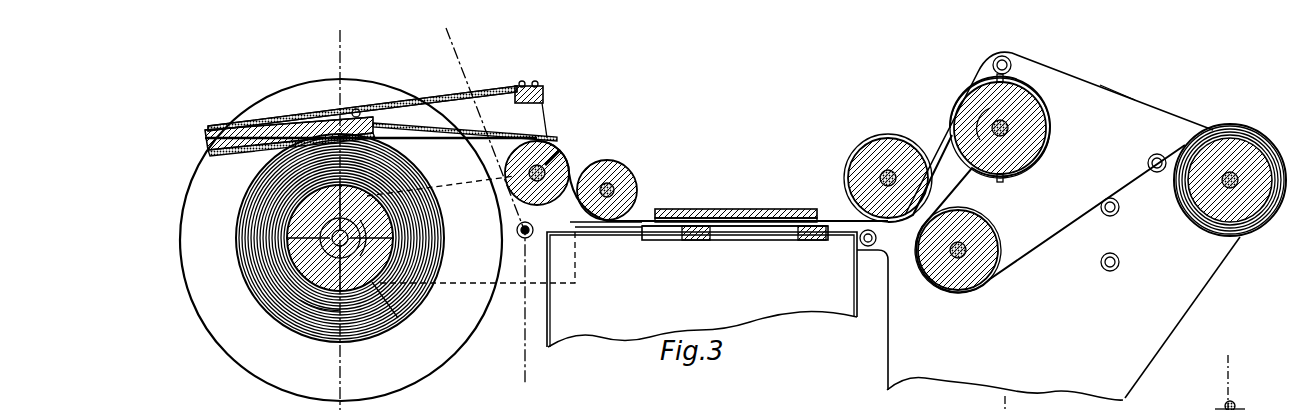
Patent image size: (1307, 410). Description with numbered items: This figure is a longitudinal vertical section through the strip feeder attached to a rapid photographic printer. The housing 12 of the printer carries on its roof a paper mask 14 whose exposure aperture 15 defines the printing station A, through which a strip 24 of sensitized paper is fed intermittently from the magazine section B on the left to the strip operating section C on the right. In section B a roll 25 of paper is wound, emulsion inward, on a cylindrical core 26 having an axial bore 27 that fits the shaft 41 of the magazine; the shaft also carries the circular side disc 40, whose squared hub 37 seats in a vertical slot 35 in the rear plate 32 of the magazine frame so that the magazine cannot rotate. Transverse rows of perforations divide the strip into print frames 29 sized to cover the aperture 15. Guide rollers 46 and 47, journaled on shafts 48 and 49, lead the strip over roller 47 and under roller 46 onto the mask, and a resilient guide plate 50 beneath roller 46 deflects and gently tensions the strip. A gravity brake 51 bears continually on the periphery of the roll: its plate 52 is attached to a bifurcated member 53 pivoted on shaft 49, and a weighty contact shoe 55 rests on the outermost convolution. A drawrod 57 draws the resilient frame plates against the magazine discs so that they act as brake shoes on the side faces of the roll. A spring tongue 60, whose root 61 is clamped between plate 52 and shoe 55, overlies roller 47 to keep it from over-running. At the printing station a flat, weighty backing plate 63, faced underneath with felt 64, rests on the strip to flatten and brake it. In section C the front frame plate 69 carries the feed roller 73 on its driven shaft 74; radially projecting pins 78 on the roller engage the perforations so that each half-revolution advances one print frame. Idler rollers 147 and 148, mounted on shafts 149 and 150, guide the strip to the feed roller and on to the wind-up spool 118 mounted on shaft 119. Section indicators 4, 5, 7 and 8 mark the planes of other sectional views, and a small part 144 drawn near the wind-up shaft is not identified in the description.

The section line 4- 4 is at (345, 37).
The section line 5- 5 is at (452, 37).
The section line 7- 7 is at (1005, 396).
The section line 8- 8 is at (1245, 355).
The printing station A is at (764, 205).
The magazine section B is at (480, 78).
The strip operating section C is at (1130, 88).
The housing 12 is at (547, 348).
The paper mask 14 is at (684, 241).
The exposure aperture 15 is at (715, 241).
The strip of sensitized paper 24 is at (660, 218).
The roll of sensitized paper 25 is at (250, 273).
The core 26 is at (383, 300).
The axial bore 27 is at (252, 238).
The print frame 29 is at (800, 241).
The rear plate 32 is at (503, 287).
The vertical slot 35 is at (375, 228).
The squared hub 37 is at (320, 298).
The circular side disc 40 is at (400, 388).
The shaft 41 is at (378, 247).
The guide roller 46 is at (636, 193).
The guide roller 47 is at (570, 172).
The shaft 48 is at (626, 170).
The shaft 49 is at (560, 150).
The guide plate 50 is at (585, 233).
The gravity brake 51 is at (292, 122).
The plate 52 is at (430, 100).
The bifurcated member 53 is at (545, 95).
The contact shoe 55 is at (205, 140).
The drawrod 57 is at (515, 231).
The spring tongue 60 is at (480, 133).
The root 61 is at (356, 108).
The backing plate 63 is at (740, 209).
The felt facing 64 is at (695, 209).
The front plate 69 is at (1190, 296).
The feed roller 73 is at (1042, 130).
The driven shaft 74 is at (1010, 126).
The pins 78 is at (1015, 62).
The spool 118 is at (1212, 200).
The shaft 119 is at (1220, 185).
The bearing 144 is at (1222, 406).
The idler roller 147 is at (870, 160).
The idler roller 148 is at (988, 232).
The shaft 149 is at (900, 155).
The shaft 150 is at (930, 280).